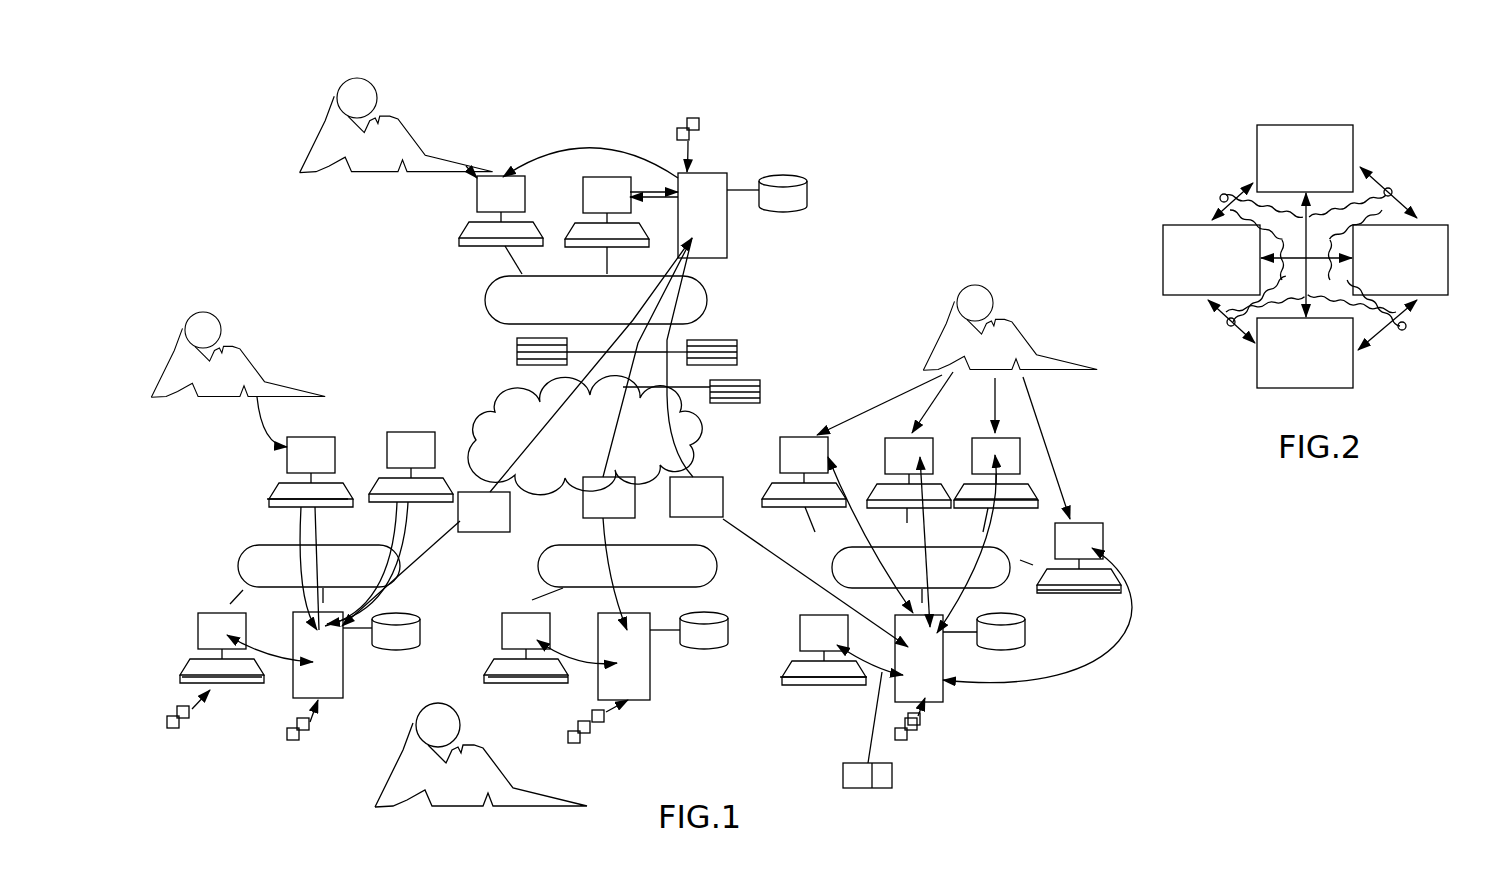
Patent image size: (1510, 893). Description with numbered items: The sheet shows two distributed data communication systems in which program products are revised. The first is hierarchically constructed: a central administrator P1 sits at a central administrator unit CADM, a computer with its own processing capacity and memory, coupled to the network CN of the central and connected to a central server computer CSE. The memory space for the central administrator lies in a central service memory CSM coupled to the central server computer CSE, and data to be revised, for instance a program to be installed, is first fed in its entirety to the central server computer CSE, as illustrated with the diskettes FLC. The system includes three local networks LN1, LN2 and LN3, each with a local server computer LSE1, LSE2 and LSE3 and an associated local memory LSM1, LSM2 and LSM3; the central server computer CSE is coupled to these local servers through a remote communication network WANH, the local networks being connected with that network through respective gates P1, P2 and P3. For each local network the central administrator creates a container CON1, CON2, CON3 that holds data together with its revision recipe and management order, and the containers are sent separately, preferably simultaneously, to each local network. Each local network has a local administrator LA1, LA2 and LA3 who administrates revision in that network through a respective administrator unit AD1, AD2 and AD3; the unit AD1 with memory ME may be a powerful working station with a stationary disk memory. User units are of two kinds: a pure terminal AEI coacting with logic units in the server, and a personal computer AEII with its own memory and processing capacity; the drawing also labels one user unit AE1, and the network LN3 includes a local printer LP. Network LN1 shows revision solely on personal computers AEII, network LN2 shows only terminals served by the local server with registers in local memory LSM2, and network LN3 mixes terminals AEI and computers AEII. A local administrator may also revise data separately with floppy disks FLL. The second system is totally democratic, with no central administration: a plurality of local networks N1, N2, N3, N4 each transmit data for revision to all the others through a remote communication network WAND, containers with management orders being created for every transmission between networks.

In FIG. 1, the central administrator P1 is at (360, 166).
In FIG. 1, the central administrator unit CADM is at (477, 196).
In FIG. 1, the central server computer CSE is at (727, 250).
In FIG. 1, the central service memory CSM is at (807, 195).
In FIG. 1, the diskettes FLC is at (702, 116).
In FIG. 1, the network in the central CN is at (707, 300).
In FIG. 1, the container CON1 is at (517, 350).
In FIG. 1, the container CON2 is at (737, 352).
In FIG. 1, the container CON3 is at (760, 390).
In FIG. 1, the remote communication network WANH is at (693, 430).
In FIG. 1, the gate P2 is at (635, 495).
In FIG. 1, the gate P3 is at (723, 480).
In FIG. 1, the local administrator LA1 is at (253, 368).
In FIG. 1, the local administrator LA2 is at (507, 786).
In FIG. 1, the local administrator LA3 is at (1027, 348).
In FIG. 1, the local administrator unit AD1 is at (292, 438).
In FIG. 1, the local administrator unit AD2 is at (507, 683).
In FIG. 1, the local administrator unit AD3 is at (1022, 460).
In FIG. 1, the user unit AEII is at (287, 455).
In FIG. 1, the user unit AEI is at (828, 437).
In FIG. 1, the end-user workstation AE1 is at (502, 613).
In FIG. 1, the memory ME is at (267, 497).
In FIG. 1, the local network LN1 is at (243, 558).
In FIG. 1, the local network LN2 is at (717, 573).
In FIG. 1, the local network LN3 is at (835, 558).
In FIG. 1, the local server computer LSE1 is at (343, 680).
In FIG. 1, the local server computer LSE2 is at (650, 688).
In FIG. 1, the local server computer LSE3 is at (943, 688).
In FIG. 1, the local memory LSM1 is at (418, 630).
In FIG. 1, the local memory LSM2 is at (690, 648).
In FIG. 1, the local memory LSM3 is at (1025, 632).
In FIG. 1, the floppy disks FLL is at (307, 740).
In FIG. 1, the local printer LP is at (883, 788).
In FIG. 2, the local network N1 is at (1185, 225).
In FIG. 2, the local network N2 is at (1318, 125).
In FIG. 2, the local network N3 is at (1432, 225).
In FIG. 2, the local network N4 is at (1353, 383).
In FIG. 2, the remote communication network WAND is at (1395, 315).